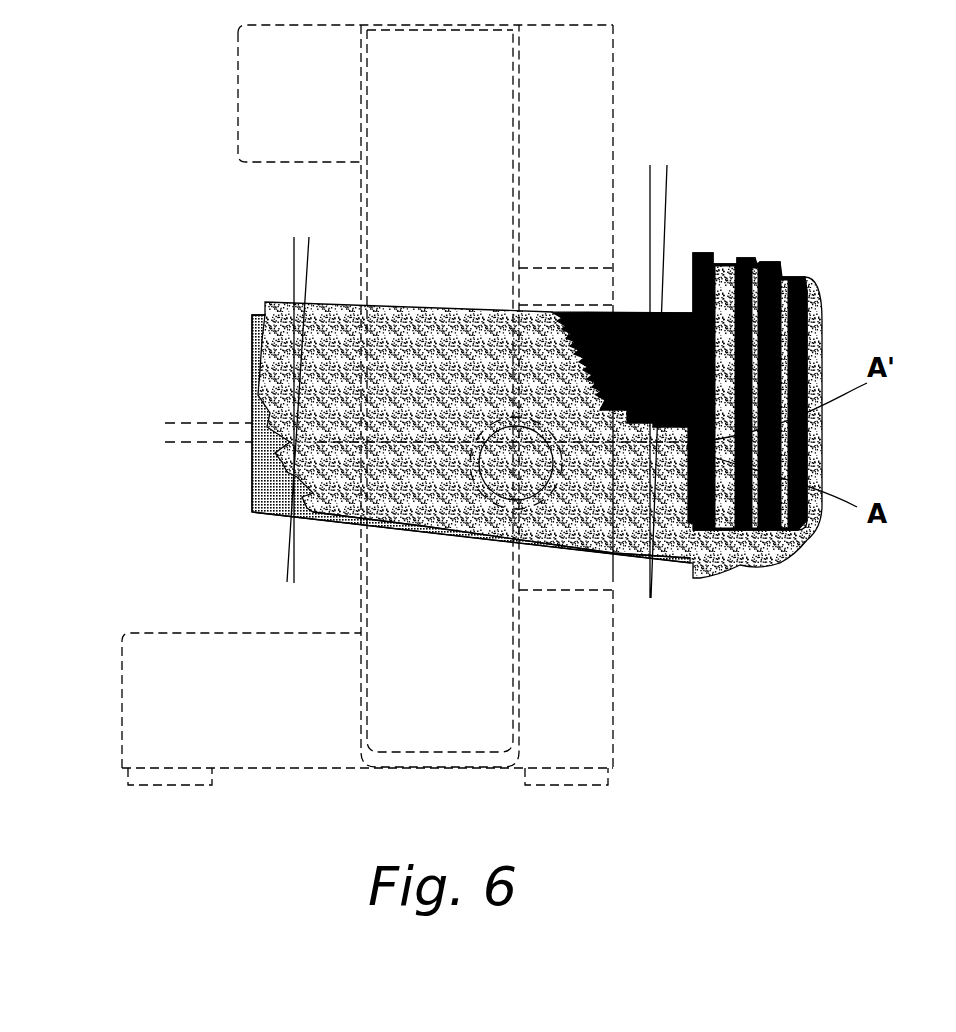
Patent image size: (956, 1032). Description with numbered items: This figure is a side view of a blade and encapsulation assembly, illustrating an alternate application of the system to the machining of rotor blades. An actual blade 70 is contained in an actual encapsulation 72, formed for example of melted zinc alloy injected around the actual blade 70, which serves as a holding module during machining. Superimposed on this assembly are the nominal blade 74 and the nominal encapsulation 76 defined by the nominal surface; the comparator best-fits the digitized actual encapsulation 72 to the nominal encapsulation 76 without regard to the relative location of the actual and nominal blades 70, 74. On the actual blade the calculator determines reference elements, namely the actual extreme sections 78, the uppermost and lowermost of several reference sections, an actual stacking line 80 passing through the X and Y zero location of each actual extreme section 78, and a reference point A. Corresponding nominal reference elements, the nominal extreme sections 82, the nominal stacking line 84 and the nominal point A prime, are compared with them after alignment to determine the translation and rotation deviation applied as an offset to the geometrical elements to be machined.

The actual blade 70 is at (494, 396).
The actual encapsulation 72 is at (457, 405).
The nominal blade 74 is at (240, 333).
The nominal encapsulation 76 is at (633, 60).
The actual extreme sections 78 is at (310, 257).
The actual stacking line 80 is at (190, 432).
The nominal extreme sections 82 is at (295, 565).
The nominal stacking line 84 is at (190, 432).